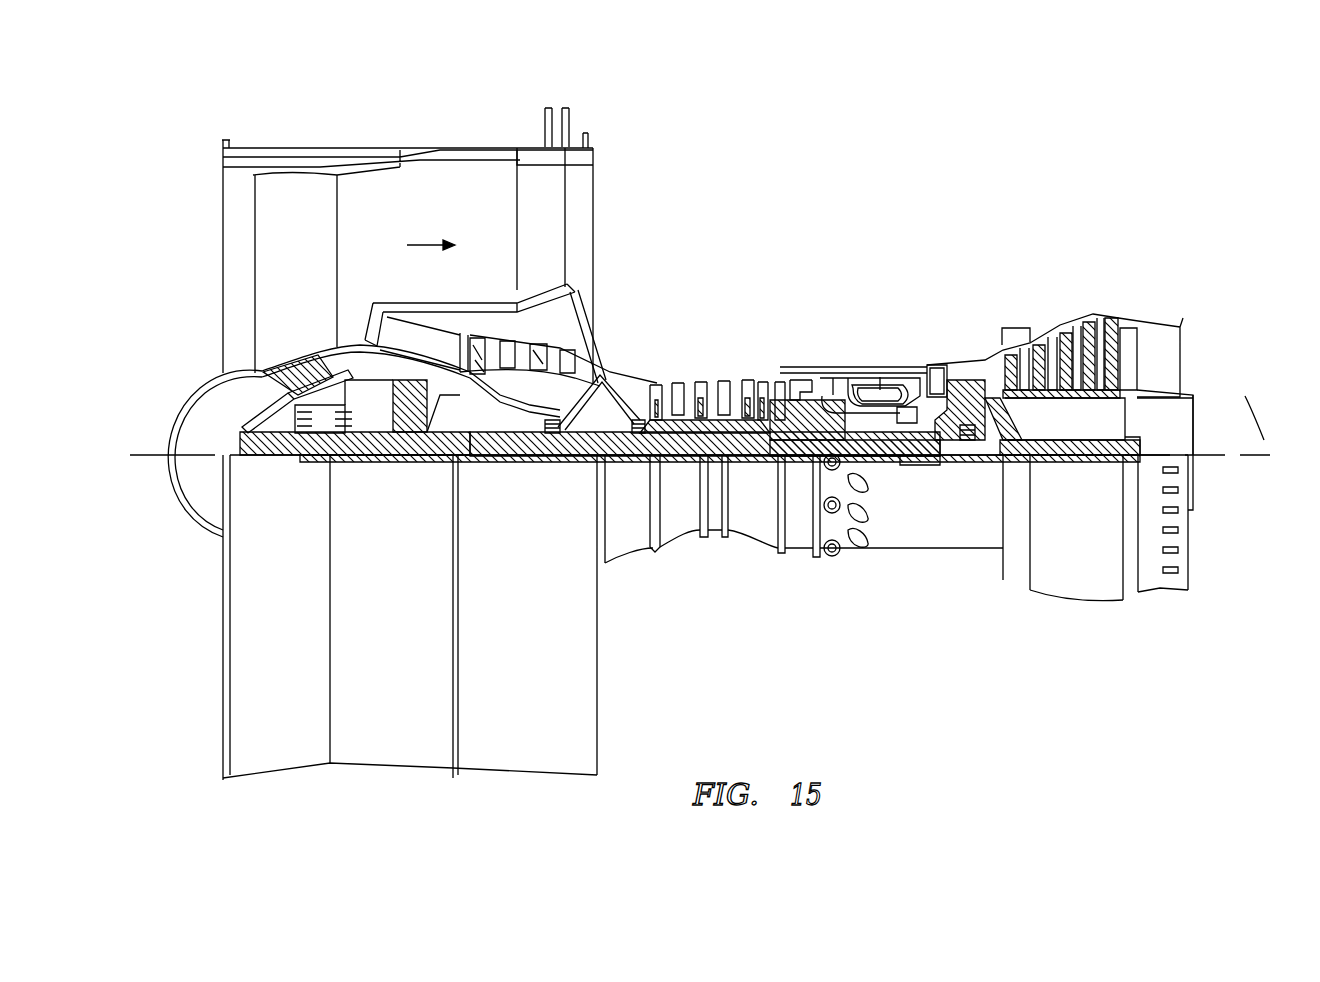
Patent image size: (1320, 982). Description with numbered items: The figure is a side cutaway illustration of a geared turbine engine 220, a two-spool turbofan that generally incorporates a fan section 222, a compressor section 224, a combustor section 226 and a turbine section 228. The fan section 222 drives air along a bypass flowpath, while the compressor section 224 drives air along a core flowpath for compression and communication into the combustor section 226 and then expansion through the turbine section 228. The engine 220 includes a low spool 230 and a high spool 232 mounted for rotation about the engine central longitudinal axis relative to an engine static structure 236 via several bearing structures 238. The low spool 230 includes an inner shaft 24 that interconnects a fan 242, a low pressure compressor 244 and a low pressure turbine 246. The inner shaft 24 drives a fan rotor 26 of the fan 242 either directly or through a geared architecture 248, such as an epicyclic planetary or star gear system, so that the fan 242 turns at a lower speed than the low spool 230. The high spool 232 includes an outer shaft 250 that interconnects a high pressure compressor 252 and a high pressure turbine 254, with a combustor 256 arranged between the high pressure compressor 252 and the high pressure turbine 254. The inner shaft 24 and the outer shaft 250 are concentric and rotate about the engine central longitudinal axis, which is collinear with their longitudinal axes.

The geared turbine engine 220 is at (921, 192).
The fan section 222 is at (335, 145).
The fan 242 is at (312, 264).
The low pressure compressor 244 is at (528, 355).
The fan rotor 26 is at (245, 412).
The geared architecture 248 is at (408, 458).
The bearing structures 238 is at (548, 458).
The compressor section 224 is at (628, 362).
The high pressure compressor 252 is at (745, 378).
The high spool 232 is at (805, 375).
The combustor section 226 is at (880, 354).
The combustor 256 is at (875, 390).
The high pressure turbine 254 is at (938, 365).
The turbine section 228 is at (1018, 303).
The low pressure turbine 246 is at (1075, 322).
The outer shaft 250 is at (908, 460).
The inner shaft 24 is at (620, 460).
The low spool 230 is at (760, 460).
The engine static structure 236 is at (797, 548).